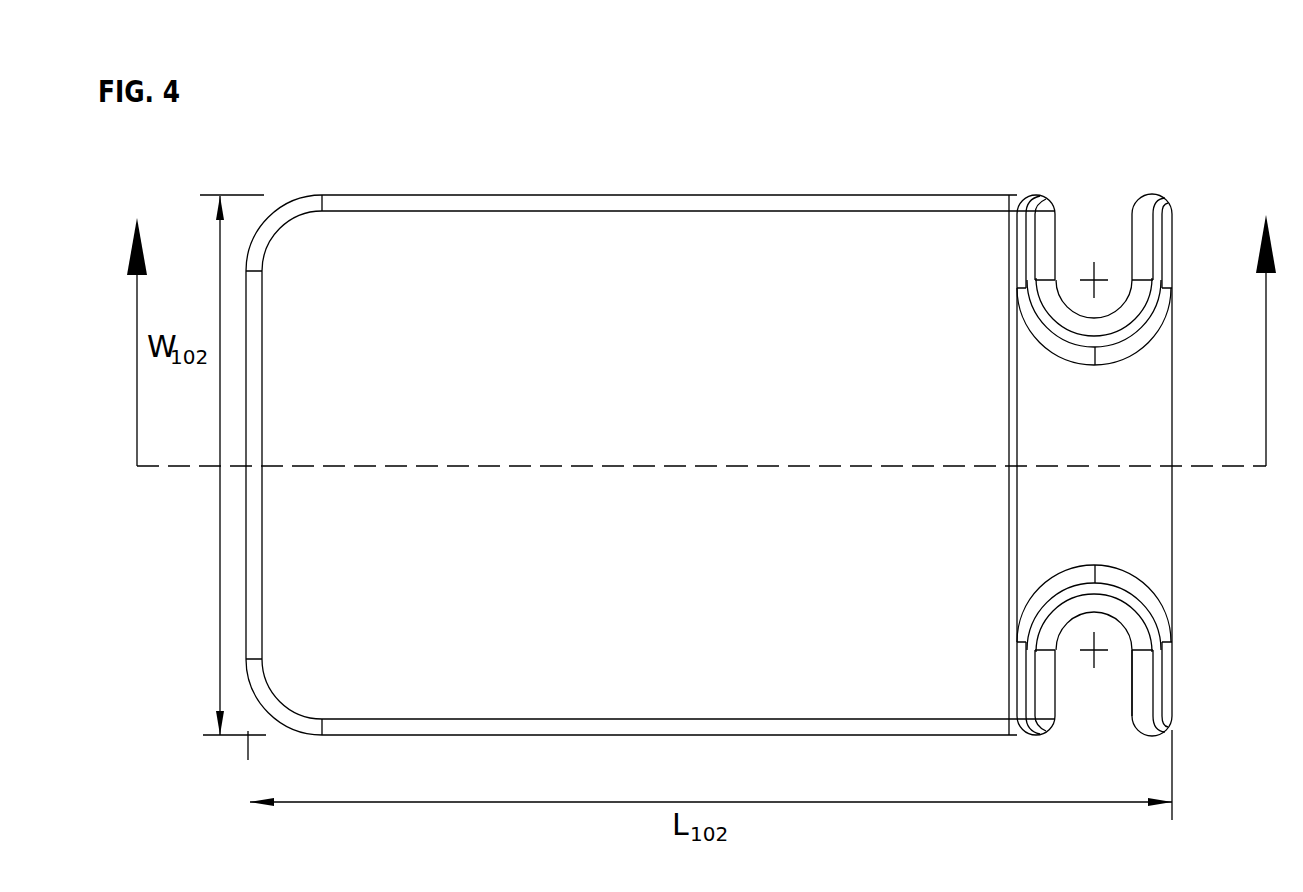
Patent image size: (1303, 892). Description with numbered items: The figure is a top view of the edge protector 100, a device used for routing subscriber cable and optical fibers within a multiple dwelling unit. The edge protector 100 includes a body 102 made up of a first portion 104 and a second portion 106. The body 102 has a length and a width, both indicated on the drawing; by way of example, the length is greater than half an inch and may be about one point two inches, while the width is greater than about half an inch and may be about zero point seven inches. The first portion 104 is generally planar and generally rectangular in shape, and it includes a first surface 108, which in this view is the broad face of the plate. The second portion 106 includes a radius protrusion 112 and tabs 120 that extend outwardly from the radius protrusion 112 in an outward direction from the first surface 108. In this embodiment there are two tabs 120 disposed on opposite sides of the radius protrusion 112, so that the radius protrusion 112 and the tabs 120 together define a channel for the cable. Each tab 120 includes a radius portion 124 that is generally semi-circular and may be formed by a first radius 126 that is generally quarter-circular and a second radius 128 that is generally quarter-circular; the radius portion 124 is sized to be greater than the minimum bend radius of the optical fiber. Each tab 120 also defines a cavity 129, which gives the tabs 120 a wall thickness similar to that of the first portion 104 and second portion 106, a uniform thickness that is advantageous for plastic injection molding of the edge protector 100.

The edge protector 100 is at (511, 145).
The body 102 is at (712, 192).
The first portion 104 is at (632, 238).
The second portion 106 is at (1193, 418).
The first surface 108 is at (641, 370).
The radius protrusion 112 is at (1150, 511).
The tab 120 is at (1172, 222).
The radius portion 124 is at (1097, 370).
The first radius 126 is at (1045, 350).
The second radius 128 is at (1140, 348).
The cavity 129 is at (1095, 710).